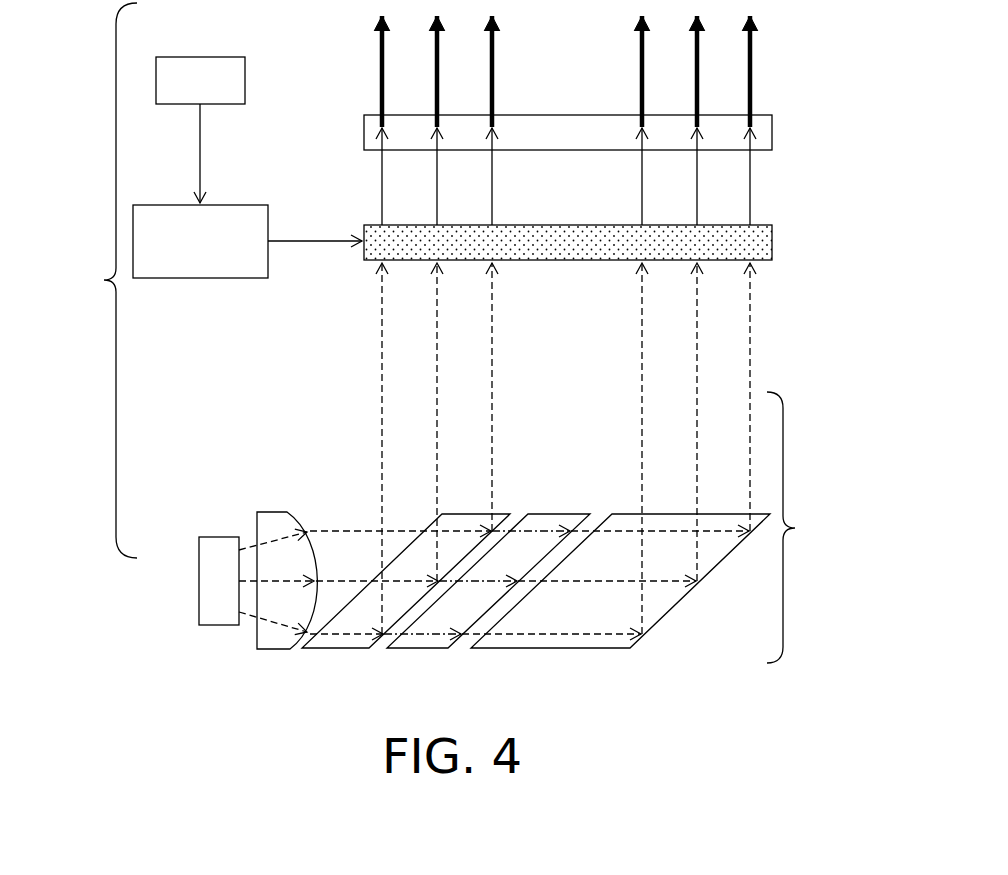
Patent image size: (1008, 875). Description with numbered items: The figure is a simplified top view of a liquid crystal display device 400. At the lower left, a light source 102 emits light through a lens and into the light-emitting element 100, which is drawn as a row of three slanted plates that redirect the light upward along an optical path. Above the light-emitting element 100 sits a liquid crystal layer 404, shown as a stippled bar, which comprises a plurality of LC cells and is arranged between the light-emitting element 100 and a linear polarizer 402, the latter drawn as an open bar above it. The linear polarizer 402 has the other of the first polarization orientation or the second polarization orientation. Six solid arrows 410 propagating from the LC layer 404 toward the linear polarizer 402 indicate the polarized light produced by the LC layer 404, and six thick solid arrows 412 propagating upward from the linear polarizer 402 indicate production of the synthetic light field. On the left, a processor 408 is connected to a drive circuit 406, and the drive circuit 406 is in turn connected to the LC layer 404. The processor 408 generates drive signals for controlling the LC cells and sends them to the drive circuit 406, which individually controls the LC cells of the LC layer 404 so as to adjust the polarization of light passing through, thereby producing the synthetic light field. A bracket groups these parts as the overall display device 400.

The light-emitting element 100 is at (795, 528).
The light source 102 is at (256, 568).
The liquid crystal display device 400 is at (104, 280).
The linear polarizer 402 is at (773, 135).
The liquid crystal layer 404 is at (773, 238).
The drive circuit 406 is at (177, 257).
The processor 408 is at (177, 94).
The solid arrows 410 is at (752, 187).
The thick solid arrows 412 is at (753, 72).